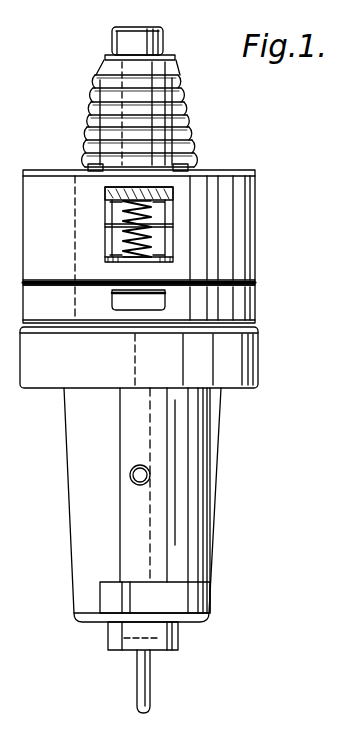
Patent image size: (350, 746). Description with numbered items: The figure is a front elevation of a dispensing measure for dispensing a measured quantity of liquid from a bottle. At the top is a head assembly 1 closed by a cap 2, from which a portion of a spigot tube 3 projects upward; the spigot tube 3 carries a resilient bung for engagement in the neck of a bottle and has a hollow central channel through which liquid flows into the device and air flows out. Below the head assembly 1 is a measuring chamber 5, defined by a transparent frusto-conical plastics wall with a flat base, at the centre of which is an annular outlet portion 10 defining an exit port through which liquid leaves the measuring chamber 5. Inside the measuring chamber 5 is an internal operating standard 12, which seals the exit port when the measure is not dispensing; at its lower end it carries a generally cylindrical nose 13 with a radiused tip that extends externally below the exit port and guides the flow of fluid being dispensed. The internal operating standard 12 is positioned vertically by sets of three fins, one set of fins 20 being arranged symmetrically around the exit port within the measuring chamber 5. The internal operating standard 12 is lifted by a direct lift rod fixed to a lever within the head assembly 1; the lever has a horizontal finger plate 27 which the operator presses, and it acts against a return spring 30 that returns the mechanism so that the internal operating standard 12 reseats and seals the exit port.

The head assembly 1 is at (218, 304).
The cap 2 is at (222, 247).
The spigot tube 3 is at (164, 42).
The measuring chamber 5 is at (193, 460).
The annular outlet portion 10 is at (178, 640).
The internal operating standard 12 is at (157, 517).
The nose 13 is at (150, 703).
The set of fins 20 is at (183, 598).
The finger plate 27 is at (176, 193).
The return spring 30 is at (167, 233).